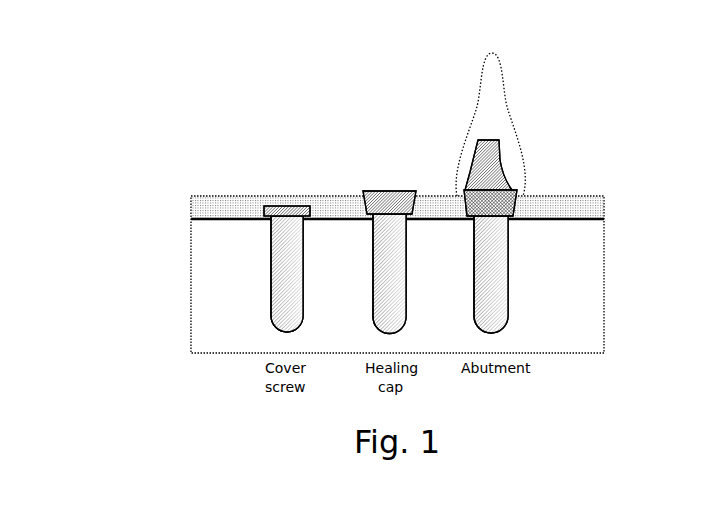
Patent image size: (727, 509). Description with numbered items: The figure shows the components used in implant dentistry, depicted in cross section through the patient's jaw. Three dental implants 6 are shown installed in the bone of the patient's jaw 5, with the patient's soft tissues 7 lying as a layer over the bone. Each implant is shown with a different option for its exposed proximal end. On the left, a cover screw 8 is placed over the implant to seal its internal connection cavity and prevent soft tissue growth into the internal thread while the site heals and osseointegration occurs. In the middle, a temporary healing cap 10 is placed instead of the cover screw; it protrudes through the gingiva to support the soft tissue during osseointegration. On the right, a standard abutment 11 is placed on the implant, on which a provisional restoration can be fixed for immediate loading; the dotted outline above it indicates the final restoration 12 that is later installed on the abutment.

The jaw bone 5 is at (217, 318).
The dental implant 6 is at (282, 288).
The soft tissues 7 is at (210, 203).
The cover screw 8 is at (287, 205).
The healing cap 10 is at (388, 192).
The abutment 11 is at (499, 159).
The final restoration 12 is at (466, 139).